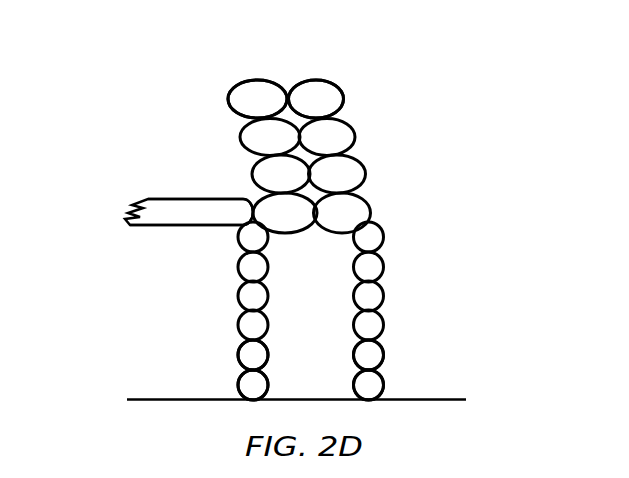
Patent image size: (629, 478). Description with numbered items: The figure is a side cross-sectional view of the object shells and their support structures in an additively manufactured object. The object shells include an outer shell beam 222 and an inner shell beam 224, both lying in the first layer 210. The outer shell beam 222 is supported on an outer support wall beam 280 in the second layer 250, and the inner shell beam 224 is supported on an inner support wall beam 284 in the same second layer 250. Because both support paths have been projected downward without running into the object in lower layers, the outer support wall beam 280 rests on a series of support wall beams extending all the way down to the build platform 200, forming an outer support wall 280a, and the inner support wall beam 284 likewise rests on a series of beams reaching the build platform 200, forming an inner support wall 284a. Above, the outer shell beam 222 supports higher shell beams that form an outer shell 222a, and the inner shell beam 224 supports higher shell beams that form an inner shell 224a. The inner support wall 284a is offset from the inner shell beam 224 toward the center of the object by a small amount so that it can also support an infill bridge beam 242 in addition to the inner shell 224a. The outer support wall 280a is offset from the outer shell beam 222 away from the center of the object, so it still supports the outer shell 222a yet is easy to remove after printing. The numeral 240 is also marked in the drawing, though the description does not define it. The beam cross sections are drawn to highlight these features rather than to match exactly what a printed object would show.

The build platform 200 is at (142, 399).
The first layer 210 is at (103, 210).
The outer shell beam 222 is at (367, 203).
The outer shell 222a is at (345, 78).
The inner shell beam 224 is at (260, 194).
The inner shell 224a is at (227, 78).
The bonding tool 240 is at (12, 75).
The infill bridge beam 242 is at (157, 199).
The second layer 250 is at (155, 237).
The outer support wall beam 280 is at (383, 242).
The outer support wall 280a is at (387, 332).
The inner support wall beam 284 is at (240, 238).
The inner support wall 284a is at (233, 333).